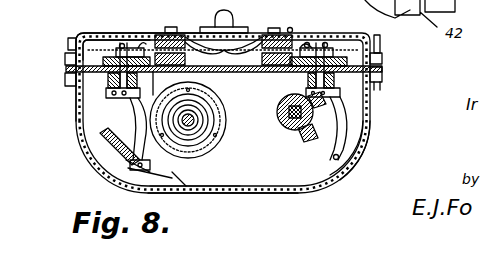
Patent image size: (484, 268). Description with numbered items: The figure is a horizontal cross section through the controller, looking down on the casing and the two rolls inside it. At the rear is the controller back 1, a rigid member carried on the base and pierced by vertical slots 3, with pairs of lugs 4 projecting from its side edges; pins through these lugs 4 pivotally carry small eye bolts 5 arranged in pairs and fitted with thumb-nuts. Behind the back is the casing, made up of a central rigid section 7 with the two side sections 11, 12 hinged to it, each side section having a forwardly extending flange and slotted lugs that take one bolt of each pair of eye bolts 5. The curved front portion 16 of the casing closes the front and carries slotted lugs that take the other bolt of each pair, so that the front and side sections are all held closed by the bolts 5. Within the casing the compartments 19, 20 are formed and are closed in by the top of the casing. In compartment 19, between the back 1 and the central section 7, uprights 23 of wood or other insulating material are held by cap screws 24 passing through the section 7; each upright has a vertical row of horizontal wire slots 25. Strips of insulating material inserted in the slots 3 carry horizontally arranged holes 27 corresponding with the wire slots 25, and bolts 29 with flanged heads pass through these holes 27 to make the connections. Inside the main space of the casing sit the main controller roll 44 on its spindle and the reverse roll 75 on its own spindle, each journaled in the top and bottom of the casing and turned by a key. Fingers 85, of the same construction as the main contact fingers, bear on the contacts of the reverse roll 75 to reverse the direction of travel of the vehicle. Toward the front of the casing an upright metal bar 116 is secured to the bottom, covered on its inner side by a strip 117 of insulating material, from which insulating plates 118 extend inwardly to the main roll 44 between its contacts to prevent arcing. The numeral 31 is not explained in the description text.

The controller back 1 is at (247, 72).
The vertical slots 3 is at (338, 88).
The lugs 4 is at (383, 65).
The eye bolts 5 is at (377, 50).
The central rigid section 7 is at (254, 33).
The side section 11 is at (338, 33).
The side section 12 is at (87, 37).
The curved front portion 16 is at (258, 190).
The compartment 19 is at (90, 50).
The compartment 20 is at (340, 145).
The uprights 23 is at (143, 33).
The cap screws 24 is at (214, 20).
The wire slots 25 is at (170, 27).
The holes 27 is at (106, 80).
The bolts 29 is at (327, 120).
The pawl arm 31 is at (127, 110).
The main controller roll 44 is at (212, 148).
The reverse roll 75 is at (285, 130).
The fingers 85 is at (375, 152).
The upright metal bar 116 is at (100, 158).
The strip of insulating material 117 is at (124, 178).
The insulating plates 118 is at (172, 172).